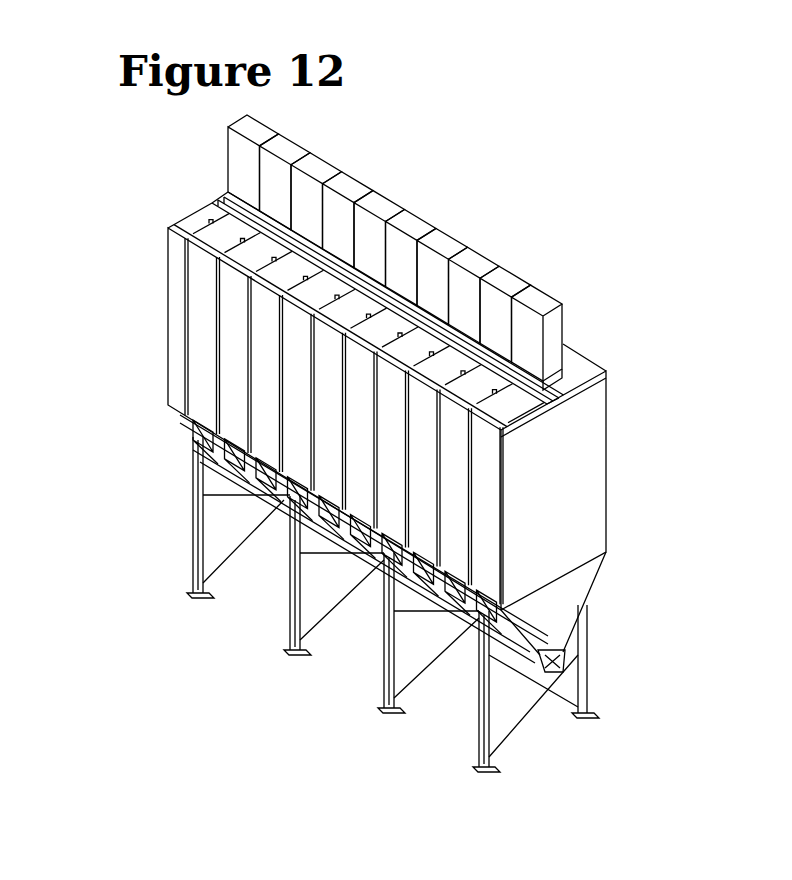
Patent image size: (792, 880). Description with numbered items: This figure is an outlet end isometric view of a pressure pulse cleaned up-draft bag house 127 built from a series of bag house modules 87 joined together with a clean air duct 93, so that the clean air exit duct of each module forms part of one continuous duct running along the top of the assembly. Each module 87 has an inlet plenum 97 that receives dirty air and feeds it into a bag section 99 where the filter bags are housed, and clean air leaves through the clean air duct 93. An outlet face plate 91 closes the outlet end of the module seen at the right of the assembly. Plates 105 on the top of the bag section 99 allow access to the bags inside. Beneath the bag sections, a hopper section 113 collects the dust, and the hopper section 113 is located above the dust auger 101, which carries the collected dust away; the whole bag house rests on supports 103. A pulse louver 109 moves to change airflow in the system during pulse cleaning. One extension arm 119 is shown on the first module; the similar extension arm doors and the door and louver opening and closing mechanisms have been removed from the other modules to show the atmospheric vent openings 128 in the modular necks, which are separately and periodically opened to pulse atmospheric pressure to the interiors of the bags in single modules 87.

The up-draft bag house 127 is at (605, 206).
The inlet plenum 97 is at (172, 332).
The module 87 is at (203, 372).
The bag section 99 is at (237, 399).
The pulse louver 109 is at (230, 191).
The extension arm 119 is at (226, 199).
The clean air duct 93 is at (567, 330).
The plates 105 is at (597, 364).
The atmospheric vent openings 128 is at (548, 392).
The outlet face plate 91 is at (606, 483).
The hopper section 113 is at (512, 630).
The dust auger 101 is at (548, 672).
The supports 103 is at (587, 675).